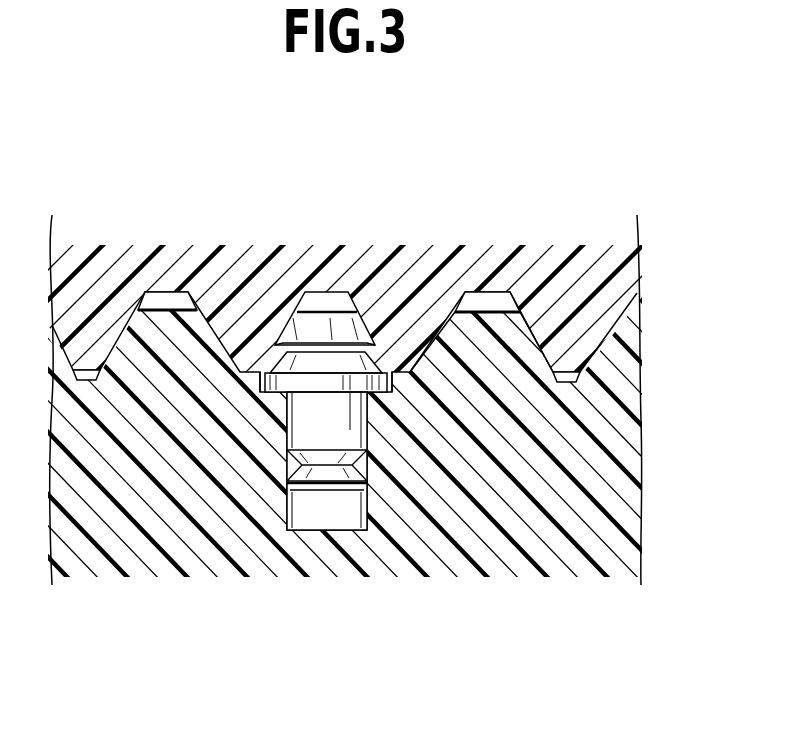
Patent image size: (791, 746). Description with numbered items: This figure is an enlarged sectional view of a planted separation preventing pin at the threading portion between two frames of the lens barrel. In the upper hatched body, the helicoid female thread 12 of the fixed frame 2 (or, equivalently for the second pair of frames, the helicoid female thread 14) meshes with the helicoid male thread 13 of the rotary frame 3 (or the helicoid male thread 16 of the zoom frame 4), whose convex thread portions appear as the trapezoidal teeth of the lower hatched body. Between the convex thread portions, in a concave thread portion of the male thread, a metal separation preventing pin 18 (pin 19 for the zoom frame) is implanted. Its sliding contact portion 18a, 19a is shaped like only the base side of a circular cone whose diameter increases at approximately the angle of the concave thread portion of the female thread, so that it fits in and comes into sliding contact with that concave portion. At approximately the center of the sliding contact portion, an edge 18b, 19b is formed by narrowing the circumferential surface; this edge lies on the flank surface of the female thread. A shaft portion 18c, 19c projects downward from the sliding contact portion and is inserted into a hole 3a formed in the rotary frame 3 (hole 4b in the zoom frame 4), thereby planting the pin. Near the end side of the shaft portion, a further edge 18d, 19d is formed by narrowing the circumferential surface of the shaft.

The helicoid female thread 12 is at (395, 364).
The helicoid female thread 14 is at (217, 293).
The fixed frame 2 is at (530, 258).
The rotary frame 3 is at (395, 483).
The zoom frame 4 is at (395, 483).
The helicoid male thread 13 is at (520, 486).
The helicoid male thread 16 is at (500, 332).
The hole 3a is at (350, 526).
The hole 4b is at (367, 508).
The separation preventing pin 18 is at (352, 412).
The separation preventing pin 19 is at (352, 412).
The sliding contact portion 18a is at (312, 244).
The sliding contact portion 19a is at (300, 328).
The edge 18b is at (395, 268).
The edge 19b is at (340, 343).
The shaft portion 18c is at (272, 536).
The shaft portion 19c is at (298, 422).
The edge 18d is at (320, 565).
The edge 19d is at (305, 482).